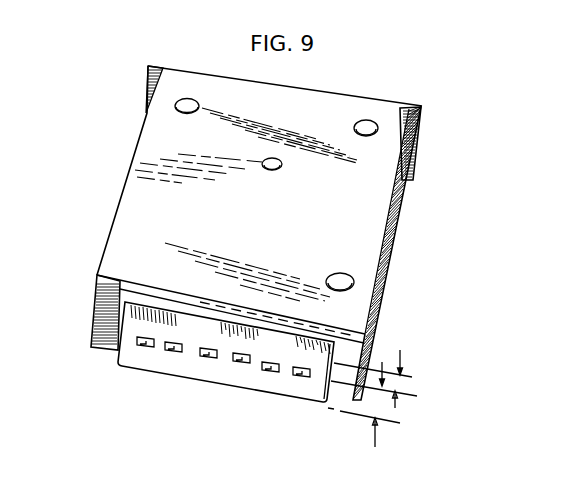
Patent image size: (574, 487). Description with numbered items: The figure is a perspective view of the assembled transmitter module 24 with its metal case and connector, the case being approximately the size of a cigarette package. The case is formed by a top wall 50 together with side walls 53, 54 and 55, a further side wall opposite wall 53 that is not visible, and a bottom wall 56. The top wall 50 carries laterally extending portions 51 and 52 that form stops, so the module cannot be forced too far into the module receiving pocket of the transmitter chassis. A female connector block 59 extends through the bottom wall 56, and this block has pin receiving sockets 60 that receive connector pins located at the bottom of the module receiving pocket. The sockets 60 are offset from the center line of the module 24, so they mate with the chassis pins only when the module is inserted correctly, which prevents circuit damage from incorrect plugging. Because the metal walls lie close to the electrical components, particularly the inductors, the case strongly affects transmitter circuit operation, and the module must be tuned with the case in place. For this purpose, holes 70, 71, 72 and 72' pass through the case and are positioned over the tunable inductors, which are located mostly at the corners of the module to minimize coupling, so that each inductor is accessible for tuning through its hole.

The transmitter module 24 is at (400, 87).
The top wall 50 is at (318, 88).
The laterally extending portion 51 is at (146, 80).
The laterally extending portion 52 is at (414, 146).
The side wall 53 is at (263, 215).
The side wall 54 is at (111, 221).
The side wall 55 is at (386, 274).
The bottom wall 56 is at (101, 309).
The female connector block 59 is at (210, 375).
The pin receiving sockets 60 is at (205, 357).
The hole 70 is at (180, 111).
The hole 71 is at (356, 125).
The hole 72 is at (347, 261).
The hole 72' is at (292, 182).